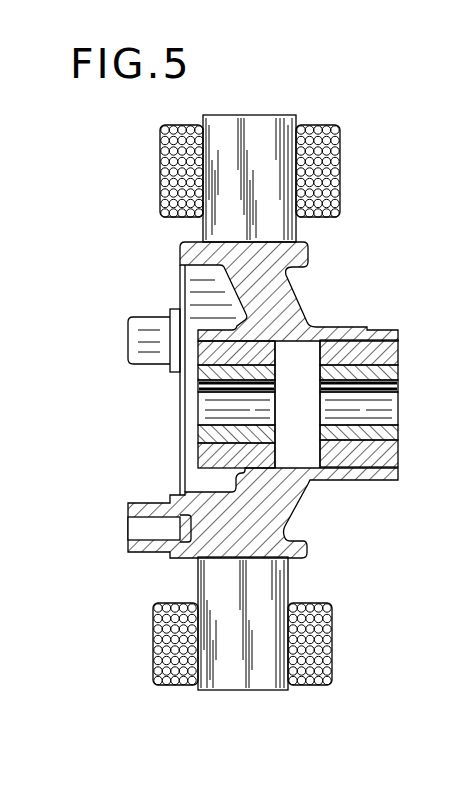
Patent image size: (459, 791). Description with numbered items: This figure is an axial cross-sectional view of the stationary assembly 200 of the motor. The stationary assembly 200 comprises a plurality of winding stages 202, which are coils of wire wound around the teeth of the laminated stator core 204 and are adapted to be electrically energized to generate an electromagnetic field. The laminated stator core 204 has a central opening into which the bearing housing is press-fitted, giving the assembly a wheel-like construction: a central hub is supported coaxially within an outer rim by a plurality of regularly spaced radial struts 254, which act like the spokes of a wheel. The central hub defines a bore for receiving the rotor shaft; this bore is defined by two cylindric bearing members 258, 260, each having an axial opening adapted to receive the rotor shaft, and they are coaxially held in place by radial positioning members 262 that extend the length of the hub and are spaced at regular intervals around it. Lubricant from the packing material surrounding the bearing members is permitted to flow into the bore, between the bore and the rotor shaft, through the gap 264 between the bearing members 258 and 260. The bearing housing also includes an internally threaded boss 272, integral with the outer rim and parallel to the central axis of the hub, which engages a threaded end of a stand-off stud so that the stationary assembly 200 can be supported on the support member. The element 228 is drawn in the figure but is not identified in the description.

The stationary assembly 200 is at (266, 423).
The winding stages 202 is at (341, 181).
The laminated stator core 204 is at (297, 116).
The sleeve band 228 is at (399, 390).
The radial struts 254 is at (290, 300).
The cylindric bearing member 258 is at (428, 413).
The cylindric bearing member 260 is at (198, 437).
The radial positioning members 262 is at (418, 458).
The gap 264 is at (320, 430).
The internally threaded boss 272 is at (150, 554).